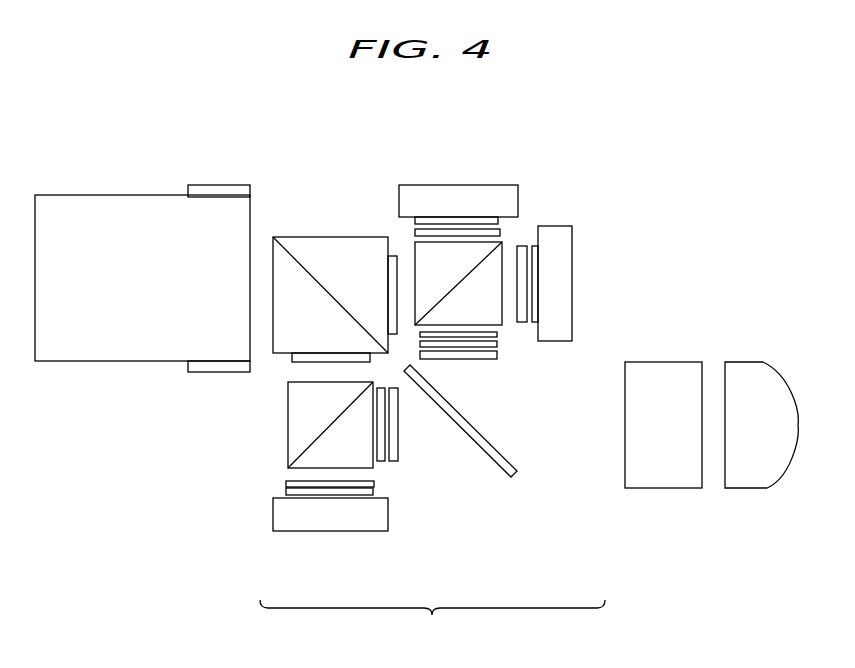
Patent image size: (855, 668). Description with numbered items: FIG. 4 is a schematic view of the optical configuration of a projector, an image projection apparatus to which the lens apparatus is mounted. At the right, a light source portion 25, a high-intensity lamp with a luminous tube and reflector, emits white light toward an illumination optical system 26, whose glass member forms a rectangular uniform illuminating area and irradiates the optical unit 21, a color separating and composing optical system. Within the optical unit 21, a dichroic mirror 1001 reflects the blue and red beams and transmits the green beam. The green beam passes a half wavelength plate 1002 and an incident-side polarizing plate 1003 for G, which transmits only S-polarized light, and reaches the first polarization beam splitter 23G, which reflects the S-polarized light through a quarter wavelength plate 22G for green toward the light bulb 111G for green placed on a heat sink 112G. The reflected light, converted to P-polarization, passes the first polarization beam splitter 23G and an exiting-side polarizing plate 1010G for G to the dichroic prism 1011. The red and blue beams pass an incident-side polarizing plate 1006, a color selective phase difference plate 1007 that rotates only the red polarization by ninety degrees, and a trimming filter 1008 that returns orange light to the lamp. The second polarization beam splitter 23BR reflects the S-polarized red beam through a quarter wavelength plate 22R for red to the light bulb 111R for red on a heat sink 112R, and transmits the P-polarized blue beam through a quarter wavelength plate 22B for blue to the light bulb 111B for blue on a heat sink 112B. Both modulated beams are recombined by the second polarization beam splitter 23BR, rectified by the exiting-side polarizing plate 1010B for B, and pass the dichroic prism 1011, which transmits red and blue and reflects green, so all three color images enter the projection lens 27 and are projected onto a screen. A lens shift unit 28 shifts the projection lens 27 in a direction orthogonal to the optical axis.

The optical unit 21 is at (432, 624).
The light source portion 25 is at (755, 368).
The illumination optical system 26 is at (667, 367).
The projection lens 27 is at (110, 202).
The lens shift unit 28 is at (210, 185).
The dichroic prism 1011 is at (296, 240).
The exiting-side polarizing plate for B 1010B is at (393, 260).
The exiting-side polarizing plate for G 1010G is at (292, 358).
The heat sink 112B is at (438, 198).
The light bulb for blue 111B is at (493, 218).
The quarter wavelength plate for blue 22B is at (416, 233).
The second polarization beam splitter 23BR is at (488, 295).
The trimming filter 1008 is at (497, 337).
The color selective phase difference plate 1007 is at (497, 345).
The incident-side polarizing plate for the light beams R and B 1006 is at (497, 356).
The quarter wavelength plate for red 22R is at (522, 246).
The light bulb for red 111R is at (536, 255).
The heat sink 112R is at (566, 268).
The first polarization beam splitter 23G is at (290, 430).
The quarter wavelength plate for green 22G is at (285, 483).
The light bulb for green 111G is at (285, 493).
The heat sink 112G is at (352, 525).
The incident-side polarizing plate for G 1003 is at (381, 463).
The half wavelength plate 1002 is at (393, 463).
The dichroic mirror 1001 is at (490, 462).